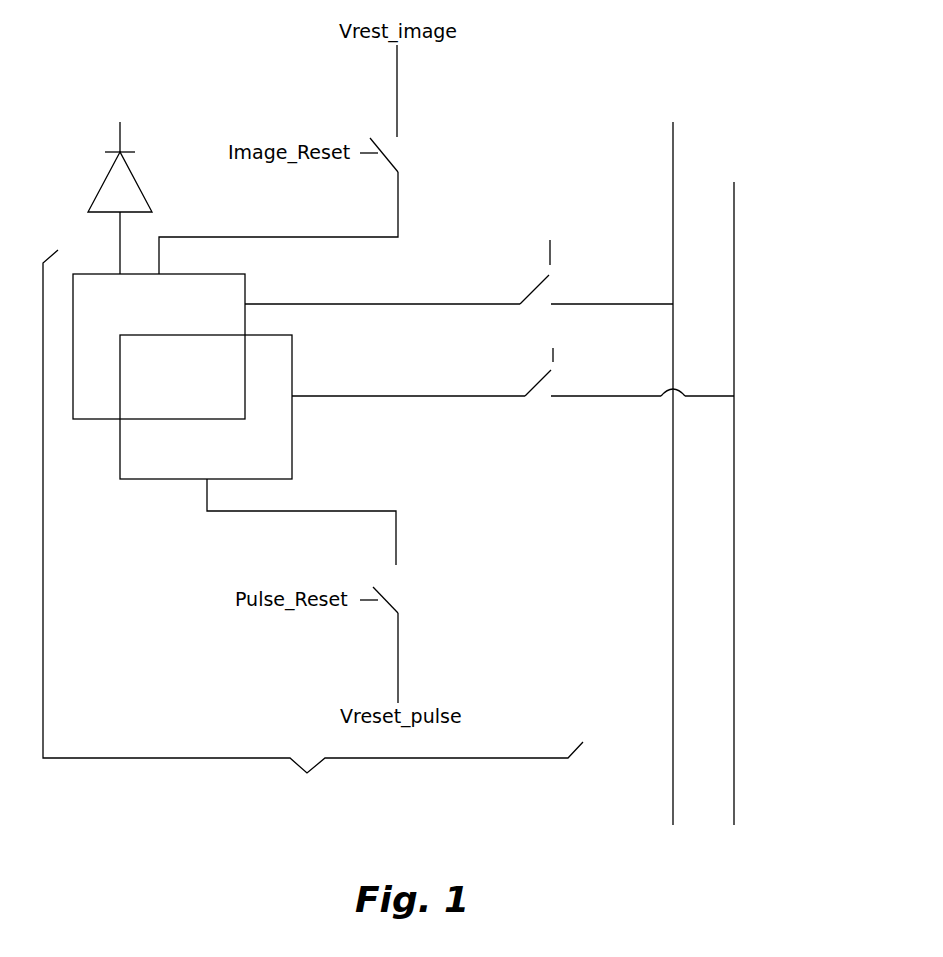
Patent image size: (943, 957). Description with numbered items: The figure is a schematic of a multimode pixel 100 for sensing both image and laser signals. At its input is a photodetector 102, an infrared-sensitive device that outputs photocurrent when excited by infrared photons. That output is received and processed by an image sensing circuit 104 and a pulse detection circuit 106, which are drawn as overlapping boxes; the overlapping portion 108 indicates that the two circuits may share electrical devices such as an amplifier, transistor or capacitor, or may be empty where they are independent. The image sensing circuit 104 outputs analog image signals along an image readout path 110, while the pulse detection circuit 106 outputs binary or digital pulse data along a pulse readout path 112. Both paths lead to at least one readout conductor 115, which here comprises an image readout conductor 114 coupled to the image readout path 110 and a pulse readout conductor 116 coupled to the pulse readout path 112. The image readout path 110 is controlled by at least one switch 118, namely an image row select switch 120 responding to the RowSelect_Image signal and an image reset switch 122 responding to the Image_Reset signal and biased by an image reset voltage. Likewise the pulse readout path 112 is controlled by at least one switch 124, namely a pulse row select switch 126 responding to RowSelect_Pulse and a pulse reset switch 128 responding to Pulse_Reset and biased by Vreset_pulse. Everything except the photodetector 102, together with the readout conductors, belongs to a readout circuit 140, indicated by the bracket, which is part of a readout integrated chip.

The multimode pixel 100 is at (144, 66).
The photodetector 102 is at (141, 190).
The image sensing circuit 104 is at (247, 287).
The pulse detection circuit 106 is at (118, 451).
The overlapping portion 108 is at (160, 372).
The image readout path 110 is at (412, 303).
The pulse readout path 112 is at (408, 395).
The image readout conductor 114 is at (672, 794).
The readout conductor 115 is at (703, 832).
The pulse readout conductor 116 is at (734, 802).
The switch 118 is at (407, 151).
The image row select switch 120 is at (550, 277).
The image reset switch 122 is at (380, 144).
The switch 124 is at (543, 403).
The pulse row select switch 126 is at (553, 372).
The pulse reset switch 128 is at (376, 585).
The readout circuit 140 is at (313, 525).